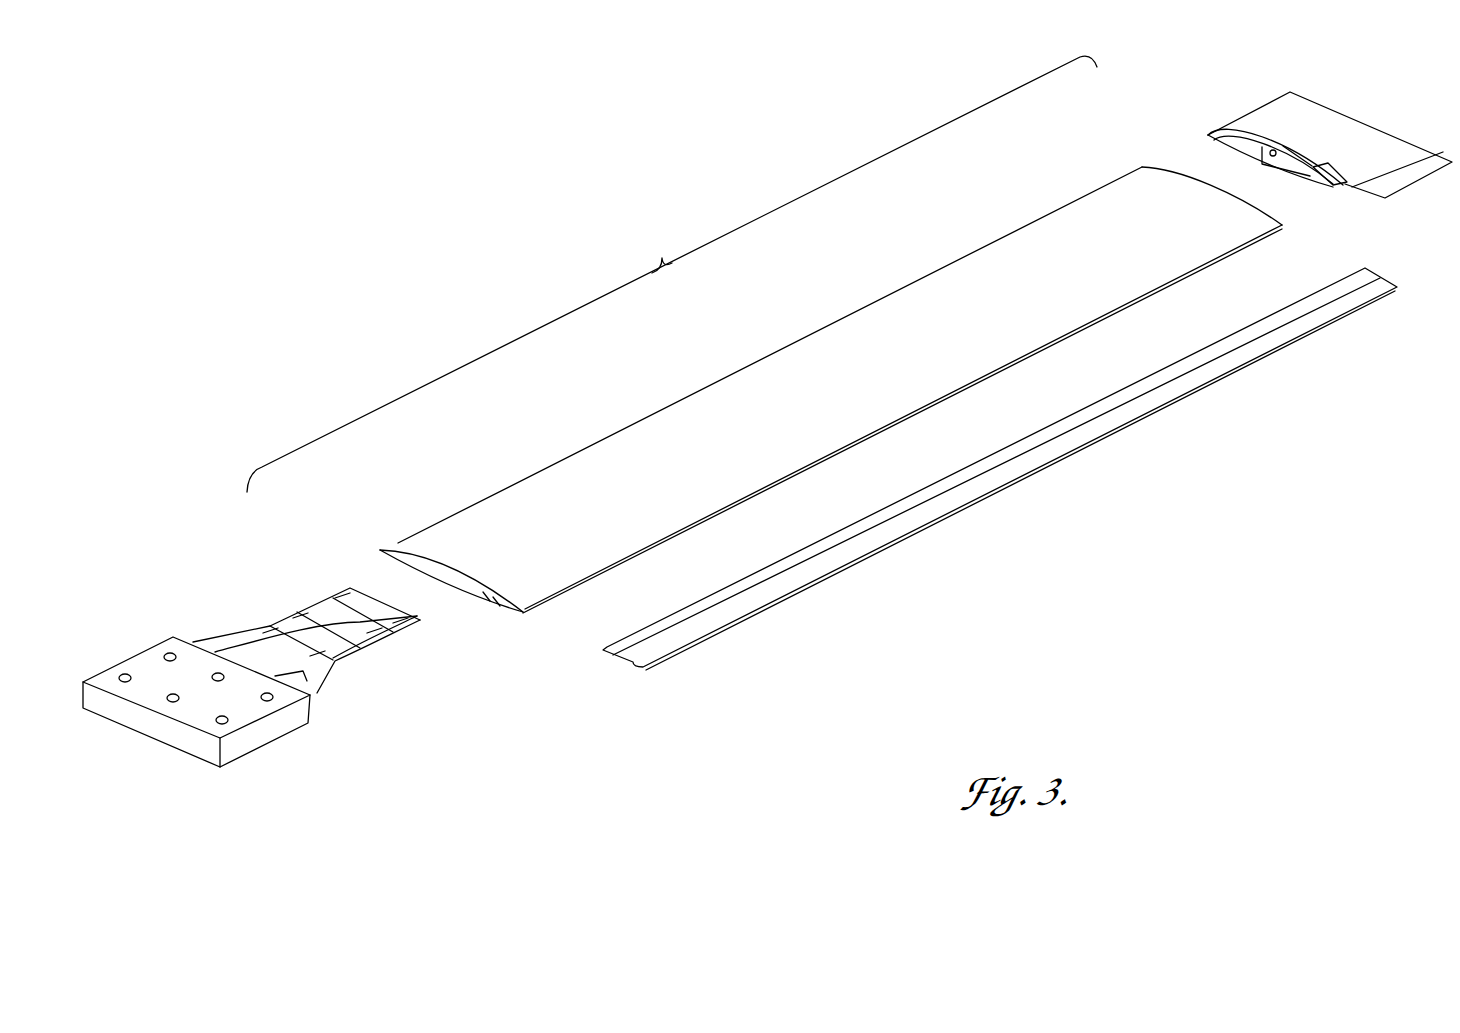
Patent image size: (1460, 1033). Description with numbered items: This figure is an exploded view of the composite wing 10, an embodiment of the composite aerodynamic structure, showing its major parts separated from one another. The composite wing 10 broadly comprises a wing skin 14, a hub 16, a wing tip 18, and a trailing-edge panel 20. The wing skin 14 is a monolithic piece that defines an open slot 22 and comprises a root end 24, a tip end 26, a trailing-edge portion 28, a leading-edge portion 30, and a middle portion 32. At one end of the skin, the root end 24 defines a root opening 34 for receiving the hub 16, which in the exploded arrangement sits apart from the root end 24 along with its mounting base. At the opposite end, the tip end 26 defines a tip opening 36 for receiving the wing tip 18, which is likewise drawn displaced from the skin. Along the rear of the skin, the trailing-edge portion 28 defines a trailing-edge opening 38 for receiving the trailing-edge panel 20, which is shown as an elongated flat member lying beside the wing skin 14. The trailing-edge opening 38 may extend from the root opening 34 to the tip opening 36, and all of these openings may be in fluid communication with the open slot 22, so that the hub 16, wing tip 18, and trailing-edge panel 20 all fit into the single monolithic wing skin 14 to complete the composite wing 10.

The composite wing 10 is at (672, 274).
The wing skin 14 is at (843, 403).
The hub 16 is at (185, 642).
The wing tip 18 is at (1322, 108).
The trailing-edge panel 20 is at (1145, 412).
The open slot 22 is at (467, 586).
The root end 24 is at (477, 512).
The tip end 26 is at (1163, 190).
The trailing-edge portion 28 is at (927, 387).
The leading-edge portion 30 is at (958, 262).
The middle portion 32 is at (795, 403).
The root opening 34 is at (405, 551).
The tip opening 36 is at (1269, 213).
The trailing-edge opening 38 is at (631, 562).